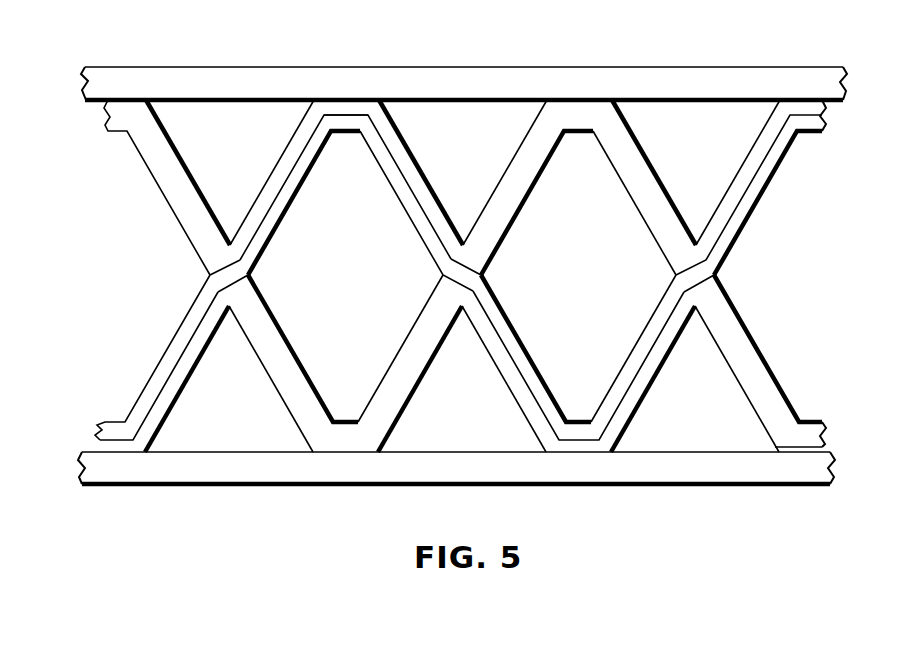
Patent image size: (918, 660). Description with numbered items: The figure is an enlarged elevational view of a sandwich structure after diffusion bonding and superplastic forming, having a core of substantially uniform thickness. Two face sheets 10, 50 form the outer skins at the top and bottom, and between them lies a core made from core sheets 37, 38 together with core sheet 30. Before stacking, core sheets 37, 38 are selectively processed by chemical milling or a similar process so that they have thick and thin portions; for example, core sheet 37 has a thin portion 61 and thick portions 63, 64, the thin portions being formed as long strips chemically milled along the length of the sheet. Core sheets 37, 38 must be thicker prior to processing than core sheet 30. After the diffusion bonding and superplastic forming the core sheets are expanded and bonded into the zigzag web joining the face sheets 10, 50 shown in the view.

The face sheet 10 is at (140, 76).
The face sheet 50 is at (167, 474).
The core sheet 30 is at (322, 128).
The core sheet 37 is at (163, 177).
The core sheet 38 is at (207, 332).
The thin portion 61 is at (286, 164).
The thick portion 63 is at (520, 188).
The thick portion 64 is at (652, 191).